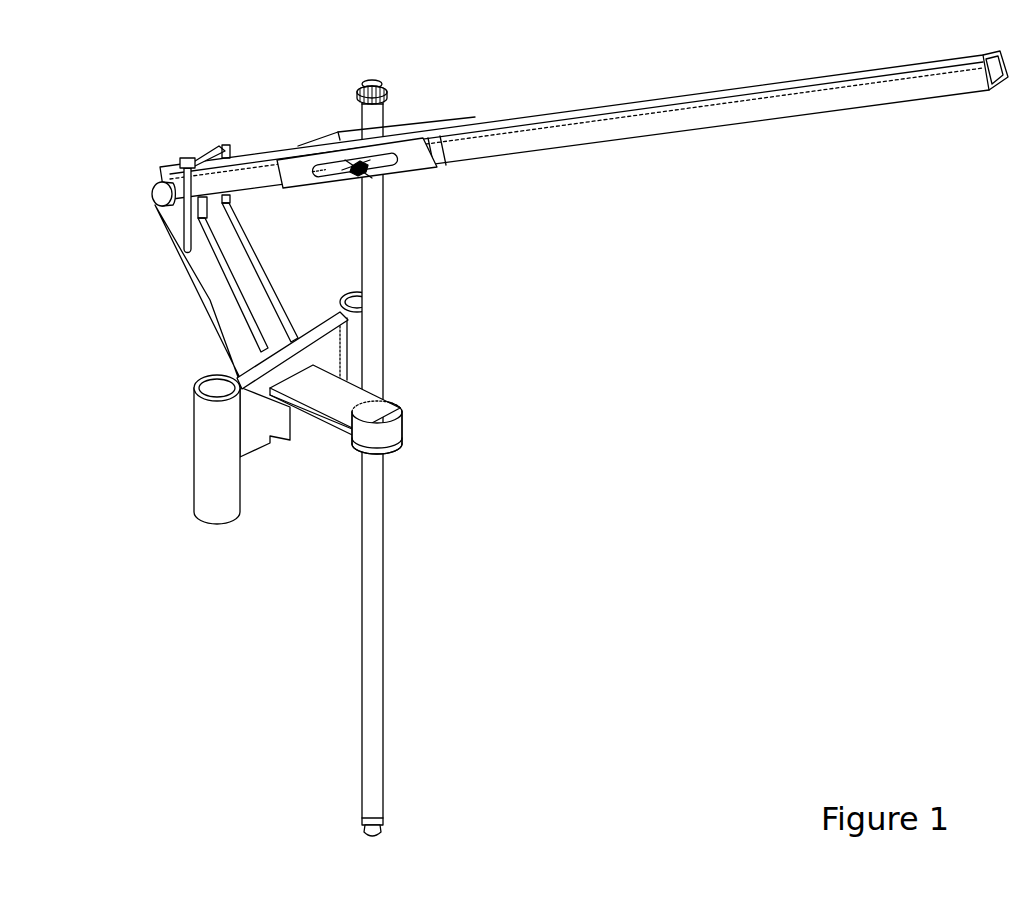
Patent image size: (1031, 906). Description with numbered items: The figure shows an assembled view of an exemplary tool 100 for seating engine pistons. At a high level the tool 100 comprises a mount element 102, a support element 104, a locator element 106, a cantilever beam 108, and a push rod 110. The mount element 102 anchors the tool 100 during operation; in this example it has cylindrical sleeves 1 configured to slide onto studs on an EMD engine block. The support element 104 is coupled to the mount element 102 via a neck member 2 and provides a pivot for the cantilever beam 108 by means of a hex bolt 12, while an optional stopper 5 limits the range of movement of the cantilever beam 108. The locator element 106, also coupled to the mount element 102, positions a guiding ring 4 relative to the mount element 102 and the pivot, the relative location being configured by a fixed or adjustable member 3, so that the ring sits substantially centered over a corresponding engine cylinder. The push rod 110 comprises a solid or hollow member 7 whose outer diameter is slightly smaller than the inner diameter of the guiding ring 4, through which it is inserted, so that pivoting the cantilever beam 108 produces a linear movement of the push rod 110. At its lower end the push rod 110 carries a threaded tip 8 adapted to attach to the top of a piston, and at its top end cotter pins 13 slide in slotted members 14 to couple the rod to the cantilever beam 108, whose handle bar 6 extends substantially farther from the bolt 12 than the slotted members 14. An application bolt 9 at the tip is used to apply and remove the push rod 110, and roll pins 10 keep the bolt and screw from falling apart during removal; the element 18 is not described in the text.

The cylindrical sleeve 1 is at (195, 386).
The neck member 2 is at (268, 270).
The fixed or adjustable member 3 is at (337, 438).
The guiding ring 4 is at (393, 403).
The stopper 5 is at (224, 146).
The handle bar 6 is at (527, 154).
The push rod member 7 is at (386, 640).
The threaded tip 8 is at (380, 838).
The application bolt 9 is at (380, 82).
The roll pin 10 is at (363, 111).
The hex bolt 12 is at (152, 190).
The cotter pin 13 is at (372, 176).
The slotted member 14 is at (348, 172).
The pole lower end 18 is at (362, 822).
The tool 100 is at (757, 600).
The mount element 102 is at (178, 458).
The support element 104 is at (162, 271).
The locator element 106 is at (412, 437).
The cantilever beam 108 is at (753, 140).
The push rod 110 is at (400, 568).